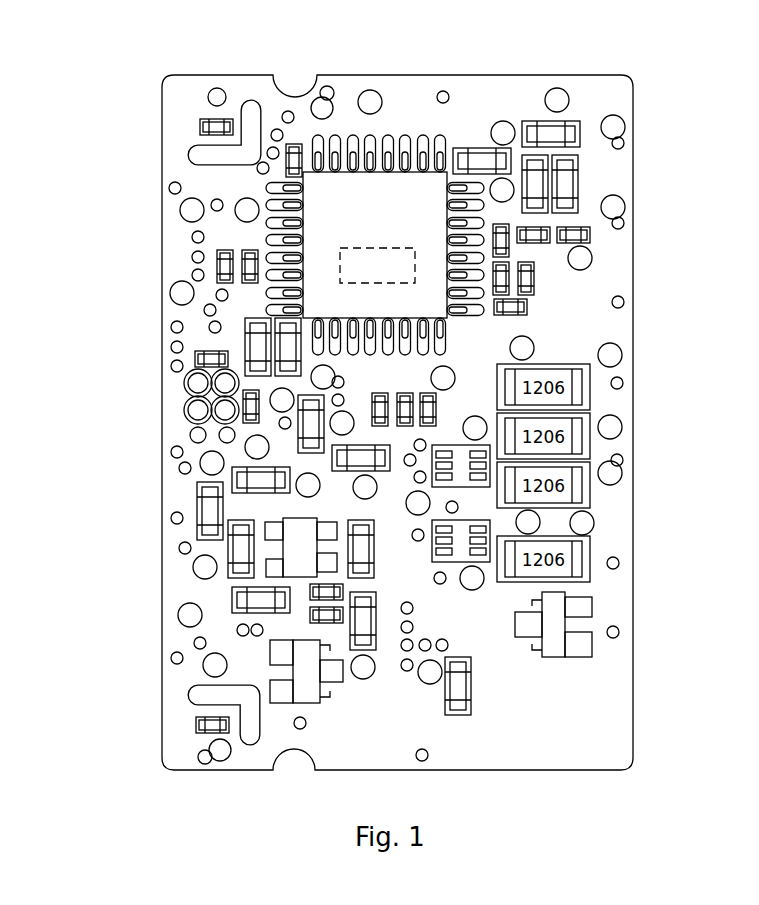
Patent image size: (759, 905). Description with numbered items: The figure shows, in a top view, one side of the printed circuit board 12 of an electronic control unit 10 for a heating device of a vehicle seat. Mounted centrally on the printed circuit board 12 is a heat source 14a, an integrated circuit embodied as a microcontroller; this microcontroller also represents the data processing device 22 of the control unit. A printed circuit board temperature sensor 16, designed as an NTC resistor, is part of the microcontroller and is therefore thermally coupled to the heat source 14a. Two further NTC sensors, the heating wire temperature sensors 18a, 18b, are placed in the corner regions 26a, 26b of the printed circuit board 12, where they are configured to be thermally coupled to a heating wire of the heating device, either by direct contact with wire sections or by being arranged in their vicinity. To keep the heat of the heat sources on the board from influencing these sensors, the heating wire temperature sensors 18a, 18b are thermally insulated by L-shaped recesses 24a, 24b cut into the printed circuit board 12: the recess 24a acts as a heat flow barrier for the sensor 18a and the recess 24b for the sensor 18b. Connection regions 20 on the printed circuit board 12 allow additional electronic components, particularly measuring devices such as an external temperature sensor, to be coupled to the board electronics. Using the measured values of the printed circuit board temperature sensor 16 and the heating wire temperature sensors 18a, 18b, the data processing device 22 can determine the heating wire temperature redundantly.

The electronic control unit 10 is at (656, 155).
The printed circuit board 12 is at (603, 611).
The heat source 14a is at (378, 188).
The printed circuit board temperature sensor 16 is at (373, 260).
The heating wire temperature sensor 18a is at (205, 742).
The heating wire temperature sensor 18b is at (207, 120).
The connection region 20 is at (624, 473).
The data processing device 22 is at (373, 187).
The L-shaped recess 24a is at (253, 737).
The L-shaped recess 24b is at (203, 152).
The corner region 26a is at (192, 748).
The corner region 26b is at (180, 110).